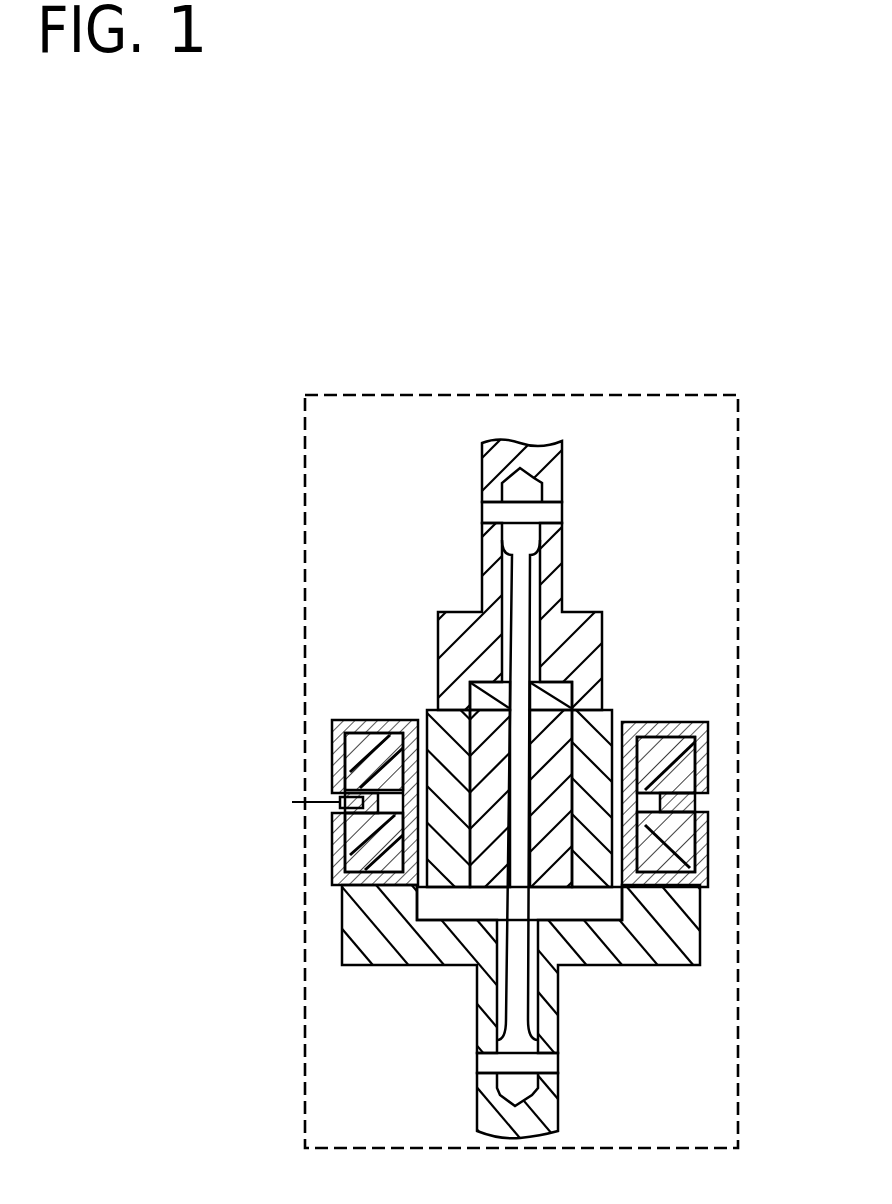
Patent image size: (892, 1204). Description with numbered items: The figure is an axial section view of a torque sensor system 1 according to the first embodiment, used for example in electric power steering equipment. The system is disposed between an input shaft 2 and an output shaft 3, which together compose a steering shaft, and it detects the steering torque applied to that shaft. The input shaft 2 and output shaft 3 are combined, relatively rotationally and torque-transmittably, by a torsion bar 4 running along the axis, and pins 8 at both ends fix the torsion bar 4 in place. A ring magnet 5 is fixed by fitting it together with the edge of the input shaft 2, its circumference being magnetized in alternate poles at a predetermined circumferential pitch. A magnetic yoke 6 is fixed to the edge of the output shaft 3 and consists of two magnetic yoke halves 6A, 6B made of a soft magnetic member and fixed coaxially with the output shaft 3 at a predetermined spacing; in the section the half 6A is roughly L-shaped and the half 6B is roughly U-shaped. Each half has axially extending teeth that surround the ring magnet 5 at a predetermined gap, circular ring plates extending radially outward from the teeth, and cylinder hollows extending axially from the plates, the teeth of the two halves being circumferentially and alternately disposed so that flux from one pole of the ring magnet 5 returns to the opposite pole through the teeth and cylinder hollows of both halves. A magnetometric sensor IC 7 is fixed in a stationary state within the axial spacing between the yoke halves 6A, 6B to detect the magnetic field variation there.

The motor 1 is at (305, 500).
The input shaft 2 is at (563, 450).
The output shaft 3 is at (552, 1110).
The torsion bar 4 is at (523, 592).
The ring magnet 5 is at (613, 710).
The magnetic yoke 6 is at (332, 752).
The magnetic yoke half 6A is at (342, 722).
The magnetic yoke half 6B is at (332, 858).
The magnetometric sensor IC 7 is at (340, 797).
The pins 8 is at (552, 515).